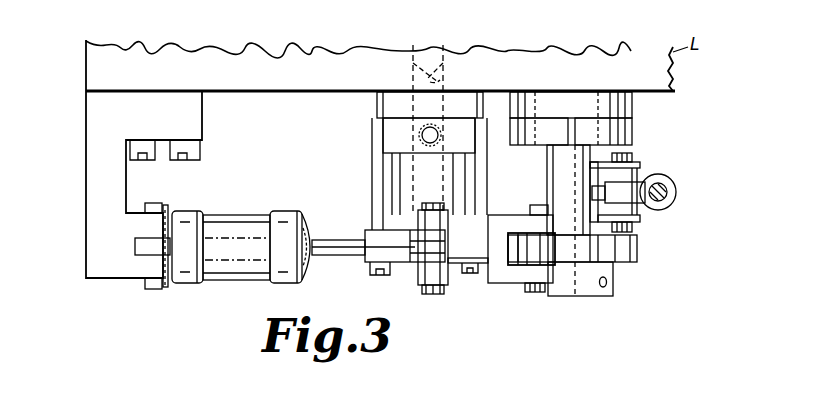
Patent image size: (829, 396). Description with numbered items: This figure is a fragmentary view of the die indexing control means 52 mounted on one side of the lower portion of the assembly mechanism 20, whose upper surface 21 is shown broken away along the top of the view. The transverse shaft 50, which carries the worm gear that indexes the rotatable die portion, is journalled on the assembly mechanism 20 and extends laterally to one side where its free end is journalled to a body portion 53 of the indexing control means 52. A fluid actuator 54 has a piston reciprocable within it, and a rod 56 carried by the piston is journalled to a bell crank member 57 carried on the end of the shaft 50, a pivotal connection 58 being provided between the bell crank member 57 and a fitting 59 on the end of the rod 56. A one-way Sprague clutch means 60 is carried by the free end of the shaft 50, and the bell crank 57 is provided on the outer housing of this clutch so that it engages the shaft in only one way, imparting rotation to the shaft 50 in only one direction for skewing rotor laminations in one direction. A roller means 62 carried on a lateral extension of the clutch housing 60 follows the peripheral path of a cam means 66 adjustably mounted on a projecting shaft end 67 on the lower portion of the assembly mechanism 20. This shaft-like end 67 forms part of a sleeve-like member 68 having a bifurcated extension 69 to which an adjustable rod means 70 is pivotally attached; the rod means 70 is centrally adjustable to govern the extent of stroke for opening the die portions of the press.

The assembly mechanism 20 is at (86, 70).
The table top surface 21 is at (169, 48).
The transverse shaft 50 is at (443, 80).
The indexing control means 52 is at (674, 116).
The body portion 53 is at (375, 100).
The fluid actuator 54 is at (262, 215).
The rod 56 is at (345, 240).
The bell crank member 57 is at (440, 280).
The pivotal connection 58 is at (432, 290).
The fitting 59 is at (375, 255).
The one-way clutch means 60 is at (470, 178).
The roller means 62 is at (535, 258).
The cam means 66 is at (638, 248).
The projecting shaft end 67 is at (575, 296).
The sleeve-like member 68 is at (635, 165).
The bifurcated extension 69 is at (568, 177).
The adjustable rod means 70 is at (668, 186).